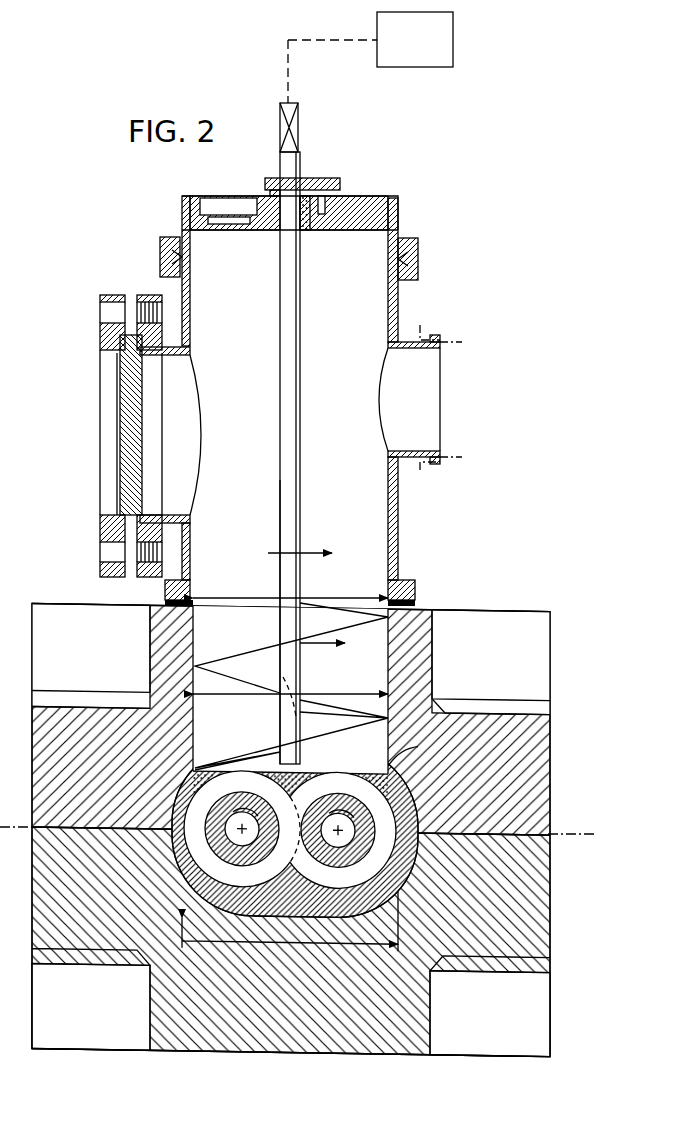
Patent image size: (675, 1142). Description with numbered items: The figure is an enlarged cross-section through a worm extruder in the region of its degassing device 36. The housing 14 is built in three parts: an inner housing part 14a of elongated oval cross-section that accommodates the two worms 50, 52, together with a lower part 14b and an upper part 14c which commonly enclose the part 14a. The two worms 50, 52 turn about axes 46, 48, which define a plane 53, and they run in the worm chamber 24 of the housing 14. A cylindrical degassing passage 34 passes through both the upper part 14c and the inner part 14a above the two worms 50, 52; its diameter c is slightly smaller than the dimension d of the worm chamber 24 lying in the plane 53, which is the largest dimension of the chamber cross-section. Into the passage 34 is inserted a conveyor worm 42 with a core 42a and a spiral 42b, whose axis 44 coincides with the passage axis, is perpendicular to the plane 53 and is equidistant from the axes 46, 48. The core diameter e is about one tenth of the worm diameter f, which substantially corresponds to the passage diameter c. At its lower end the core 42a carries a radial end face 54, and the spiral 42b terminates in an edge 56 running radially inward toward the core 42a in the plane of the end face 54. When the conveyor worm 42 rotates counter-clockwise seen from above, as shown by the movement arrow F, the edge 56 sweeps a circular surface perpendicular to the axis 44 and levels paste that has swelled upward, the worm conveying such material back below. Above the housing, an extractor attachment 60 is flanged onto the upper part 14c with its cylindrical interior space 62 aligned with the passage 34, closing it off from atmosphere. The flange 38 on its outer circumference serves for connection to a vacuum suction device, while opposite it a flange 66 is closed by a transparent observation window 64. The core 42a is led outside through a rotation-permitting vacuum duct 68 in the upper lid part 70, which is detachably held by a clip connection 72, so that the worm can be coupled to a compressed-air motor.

The housing 14 is at (556, 898).
The inner housing part 14a is at (424, 790).
The lower part 14b is at (380, 1050).
The upper part 14c is at (420, 665).
The worm chamber 24 is at (318, 924).
The degassing passage 34 is at (414, 614).
The degassing device 36 is at (456, 308).
The flange 38 is at (412, 334).
The conveyor worm 42 is at (303, 452).
The core 42a is at (300, 506).
The spiral 42b is at (240, 652).
The conveyor worm axis 44 is at (290, 66).
The axis 46 is at (180, 803).
The axis 48 is at (416, 818).
The worm 50 is at (194, 838).
The worm 52 is at (398, 848).
The plane 53 is at (572, 835).
The end face 54 is at (386, 754).
The edge 56 is at (255, 768).
The extractor attachment 60 is at (400, 217).
The cylindrical interior space 62 is at (392, 517).
The observation window 64 is at (122, 385).
The flange 66 is at (150, 293).
The vacuum duct 68 is at (310, 175).
The upper lid part 70 is at (360, 200).
The clip connection 72 is at (420, 250).
The core diameter e is at (296, 556).
The worm diameter f is at (320, 598).
The passage diameter c is at (266, 698).
The worm chamber dimension d is at (300, 944).
The movement arrow F is at (312, 646).